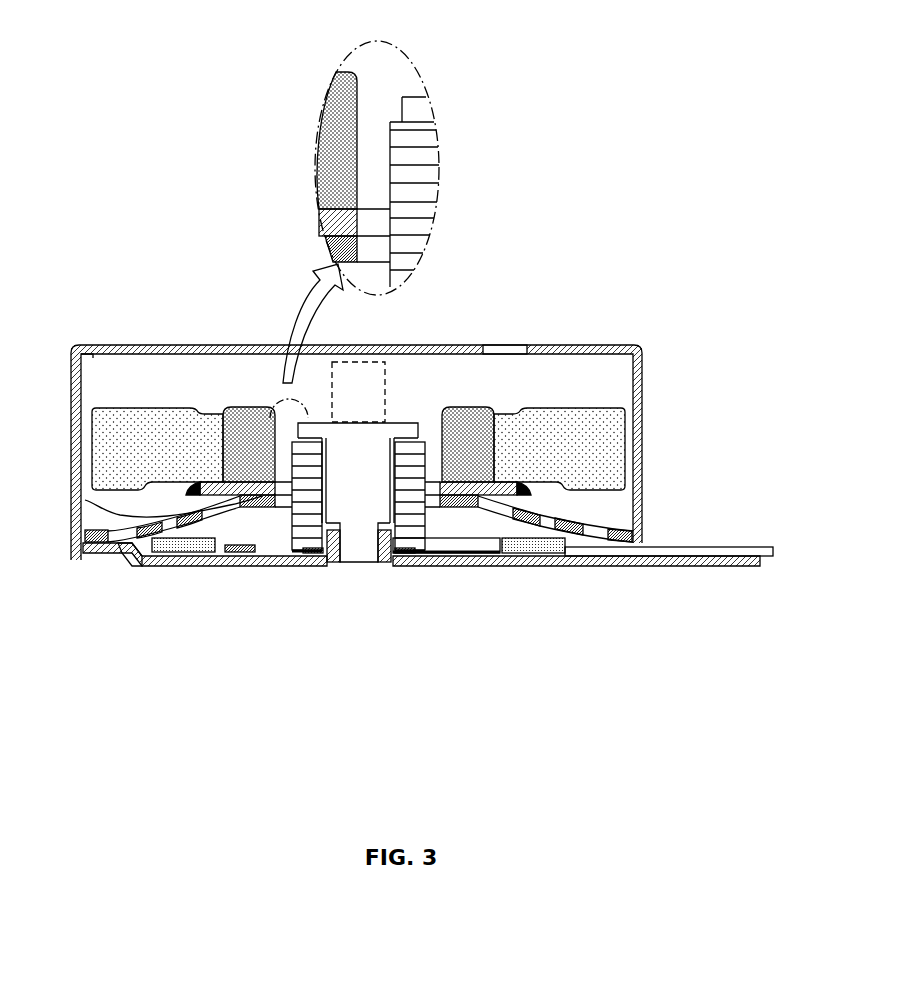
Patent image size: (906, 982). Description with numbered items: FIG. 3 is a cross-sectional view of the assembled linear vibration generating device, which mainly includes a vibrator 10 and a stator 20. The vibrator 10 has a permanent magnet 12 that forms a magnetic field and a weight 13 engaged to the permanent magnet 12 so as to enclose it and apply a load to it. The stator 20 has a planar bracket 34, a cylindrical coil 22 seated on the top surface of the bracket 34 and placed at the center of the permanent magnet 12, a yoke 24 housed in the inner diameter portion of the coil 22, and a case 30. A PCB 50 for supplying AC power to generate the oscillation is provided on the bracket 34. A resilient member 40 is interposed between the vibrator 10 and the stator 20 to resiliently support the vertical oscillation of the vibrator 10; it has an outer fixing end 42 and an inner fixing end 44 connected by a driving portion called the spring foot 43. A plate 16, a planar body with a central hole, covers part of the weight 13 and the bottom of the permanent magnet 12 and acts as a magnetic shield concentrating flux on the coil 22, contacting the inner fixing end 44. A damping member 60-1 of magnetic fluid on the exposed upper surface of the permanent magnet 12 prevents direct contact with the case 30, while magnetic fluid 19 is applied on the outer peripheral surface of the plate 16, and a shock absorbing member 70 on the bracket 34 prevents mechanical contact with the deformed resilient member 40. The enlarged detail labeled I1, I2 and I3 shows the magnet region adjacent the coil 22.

The vibrator 10 is at (118, 294).
The permanent magnet 12 is at (242, 410).
The weight 13 is at (160, 408).
The plate 16 is at (81, 501).
The magnetic fluid 19 is at (527, 487).
The stator 20 is at (725, 235).
The coil 22 is at (415, 447).
The yoke 24 is at (352, 440).
The case 30 is at (647, 387).
The bracket 34 is at (672, 560).
The resilient member 40 is at (45, 622).
The outer fixing end 42 is at (90, 545).
The spring foot 43 is at (136, 560).
The inner fixing end 44 is at (257, 502).
The PCB 50 is at (447, 545).
The damping member 60-1 is at (253, 407).
The shock absorbing member 70 is at (535, 548).
The magnet (enlarged) I1 is at (358, 110).
The plate (enlarged) I2 is at (356, 212).
The weight (enlarged) I3 is at (357, 242).